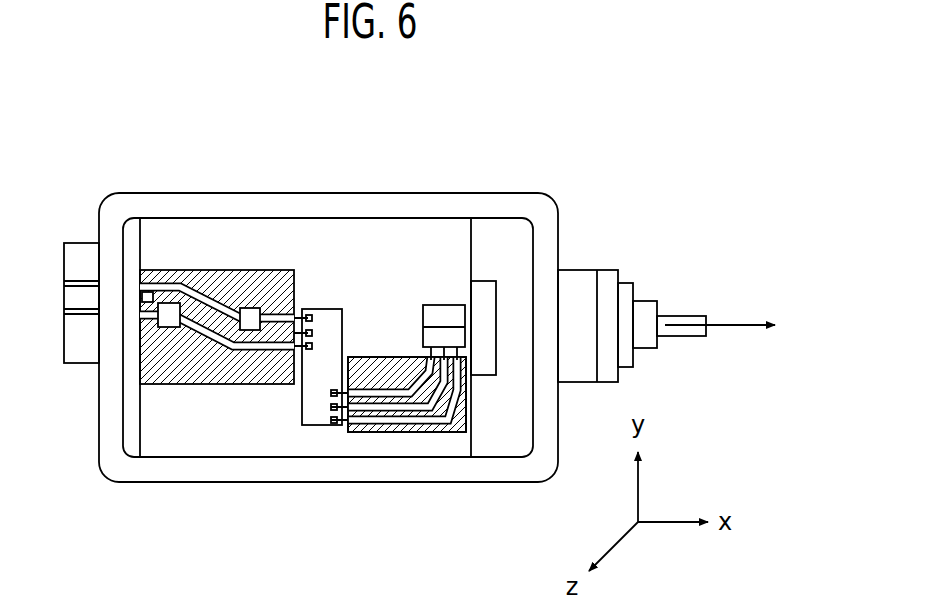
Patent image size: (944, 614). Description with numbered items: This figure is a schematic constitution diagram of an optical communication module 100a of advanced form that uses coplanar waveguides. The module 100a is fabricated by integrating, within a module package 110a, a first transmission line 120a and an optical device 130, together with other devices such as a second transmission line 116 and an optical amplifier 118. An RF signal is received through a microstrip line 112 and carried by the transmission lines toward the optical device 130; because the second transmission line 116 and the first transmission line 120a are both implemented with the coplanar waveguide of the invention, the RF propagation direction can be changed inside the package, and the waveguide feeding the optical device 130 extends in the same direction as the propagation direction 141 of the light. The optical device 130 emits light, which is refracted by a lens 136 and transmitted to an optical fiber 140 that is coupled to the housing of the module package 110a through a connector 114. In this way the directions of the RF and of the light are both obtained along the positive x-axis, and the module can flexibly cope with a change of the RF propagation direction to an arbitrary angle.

The optical communication module 100a is at (158, 100).
The module package 110a is at (149, 472).
The microstrip line 112 is at (148, 293).
The connector 114 is at (607, 278).
The second transmission line 116 is at (217, 373).
The optical amplifier 118 is at (318, 418).
The first transmission line 120a is at (412, 443).
The optical device 130 is at (430, 302).
The lens 136 is at (487, 288).
The optical fiber 140 is at (682, 313).
The propagation direction of light 141 is at (722, 327).